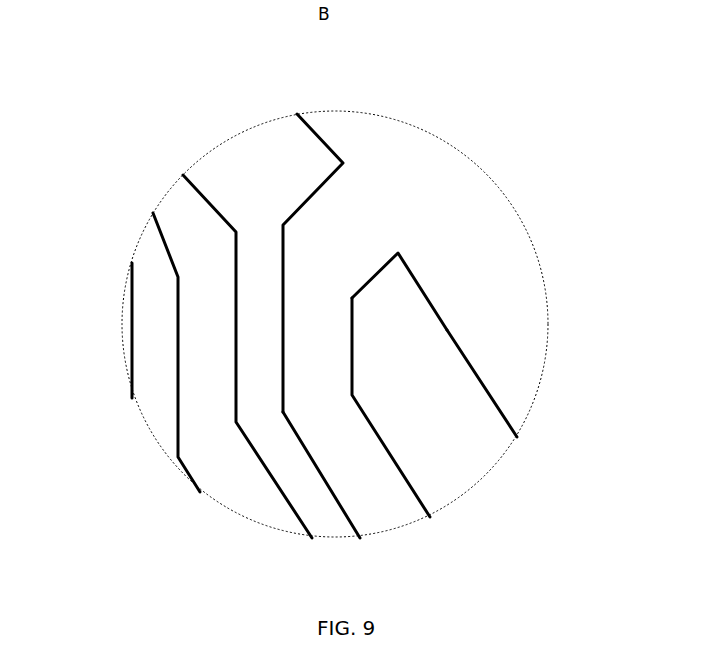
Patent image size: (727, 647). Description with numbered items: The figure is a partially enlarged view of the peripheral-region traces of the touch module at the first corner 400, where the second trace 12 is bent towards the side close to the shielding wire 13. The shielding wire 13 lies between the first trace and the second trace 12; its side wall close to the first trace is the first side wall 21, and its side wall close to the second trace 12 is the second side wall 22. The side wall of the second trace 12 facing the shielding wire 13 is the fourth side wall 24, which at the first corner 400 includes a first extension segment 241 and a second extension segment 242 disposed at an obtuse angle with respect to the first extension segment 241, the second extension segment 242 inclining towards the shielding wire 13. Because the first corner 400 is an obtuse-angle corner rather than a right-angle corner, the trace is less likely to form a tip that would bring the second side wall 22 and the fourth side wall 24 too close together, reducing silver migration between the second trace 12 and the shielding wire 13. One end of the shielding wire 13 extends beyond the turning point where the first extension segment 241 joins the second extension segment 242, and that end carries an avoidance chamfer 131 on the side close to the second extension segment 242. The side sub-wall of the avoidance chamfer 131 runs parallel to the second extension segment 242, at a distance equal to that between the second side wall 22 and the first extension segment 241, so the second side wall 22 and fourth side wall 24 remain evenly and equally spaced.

The first corner 400 is at (150, 96).
The second trace 12 is at (266, 198).
The shielding wire 13 is at (453, 457).
The avoidance chamfer 131 is at (385, 330).
The first side wall 21 is at (463, 352).
The second side wall 22 is at (382, 438).
The fourth side wall 24 is at (87, 467).
The first extension segment 241 is at (313, 467).
The second extension segment 242 is at (282, 343).